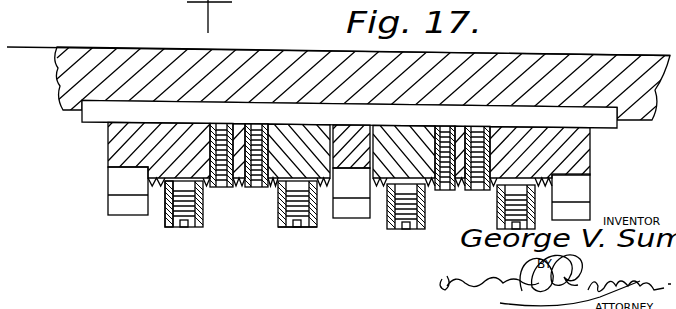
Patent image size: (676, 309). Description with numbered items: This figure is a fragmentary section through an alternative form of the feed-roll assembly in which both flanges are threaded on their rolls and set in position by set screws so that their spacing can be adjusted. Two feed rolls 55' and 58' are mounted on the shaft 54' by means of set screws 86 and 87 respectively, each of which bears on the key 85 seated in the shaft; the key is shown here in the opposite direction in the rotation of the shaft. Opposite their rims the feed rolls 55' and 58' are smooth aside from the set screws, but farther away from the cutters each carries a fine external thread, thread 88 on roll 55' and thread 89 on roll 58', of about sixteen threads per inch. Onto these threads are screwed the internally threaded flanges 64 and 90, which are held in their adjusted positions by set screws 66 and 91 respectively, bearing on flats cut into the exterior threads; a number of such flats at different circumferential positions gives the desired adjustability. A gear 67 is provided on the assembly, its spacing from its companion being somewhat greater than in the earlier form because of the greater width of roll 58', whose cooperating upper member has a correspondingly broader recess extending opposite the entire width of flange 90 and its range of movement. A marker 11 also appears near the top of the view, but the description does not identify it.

The section line marker 11 is at (211, 20).
The shaft 54' is at (362, 154).
The key 85 is at (603, 128).
The feed roll 55' is at (319, 142).
The gear 67 is at (118, 185).
The fine external thread 88 is at (157, 188).
The internally threaded flange 64 is at (165, 200).
The set screw 66 is at (183, 228).
The set screw 86 is at (226, 188).
The set screw 87 is at (255, 188).
The internally threaded flange 90 is at (280, 228).
The set screw 91 is at (293, 228).
The feed roll 58' is at (322, 239).
The fine external thread 89 is at (327, 187).